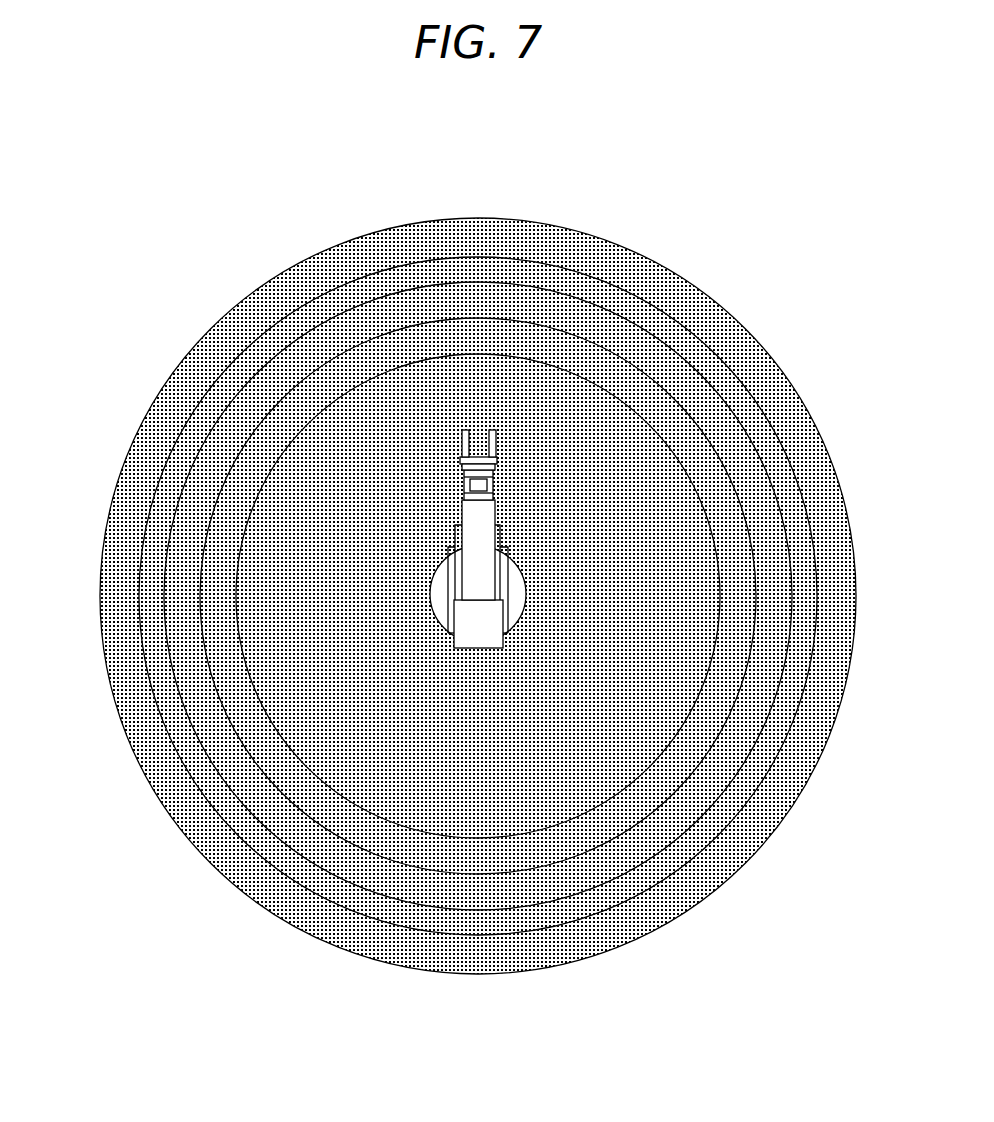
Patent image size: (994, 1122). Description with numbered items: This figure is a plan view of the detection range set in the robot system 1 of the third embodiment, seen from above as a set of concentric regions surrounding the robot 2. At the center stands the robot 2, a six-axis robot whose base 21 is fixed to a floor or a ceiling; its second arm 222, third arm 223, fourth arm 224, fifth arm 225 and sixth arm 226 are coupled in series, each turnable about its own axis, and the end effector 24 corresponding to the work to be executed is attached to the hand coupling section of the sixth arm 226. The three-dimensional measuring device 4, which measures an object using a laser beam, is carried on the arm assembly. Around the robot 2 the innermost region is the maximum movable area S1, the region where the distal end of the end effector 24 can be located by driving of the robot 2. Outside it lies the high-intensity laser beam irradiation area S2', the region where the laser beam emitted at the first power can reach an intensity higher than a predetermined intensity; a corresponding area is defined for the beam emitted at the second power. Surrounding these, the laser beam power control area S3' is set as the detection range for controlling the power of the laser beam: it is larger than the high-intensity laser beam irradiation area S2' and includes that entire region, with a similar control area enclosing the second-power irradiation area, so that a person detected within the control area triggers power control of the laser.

The robot system 1 is at (478, 546).
The robot 2 is at (472, 605).
The three-dimensional measuring device 4 is at (462, 489).
The base 21 is at (447, 613).
The end effector 24 is at (476, 458).
The second arm 222 is at (443, 581).
The third arm 223 is at (493, 625).
The fourth arm 224 is at (488, 514).
The fifth arm 225 is at (494, 487).
The sixth arm 226 is at (495, 461).
The maximum movable area S1 is at (621, 392).
The high-intensity laser beam irradiation area S2' is at (478, 530).
The laser beam power control area S3' is at (478, 546).